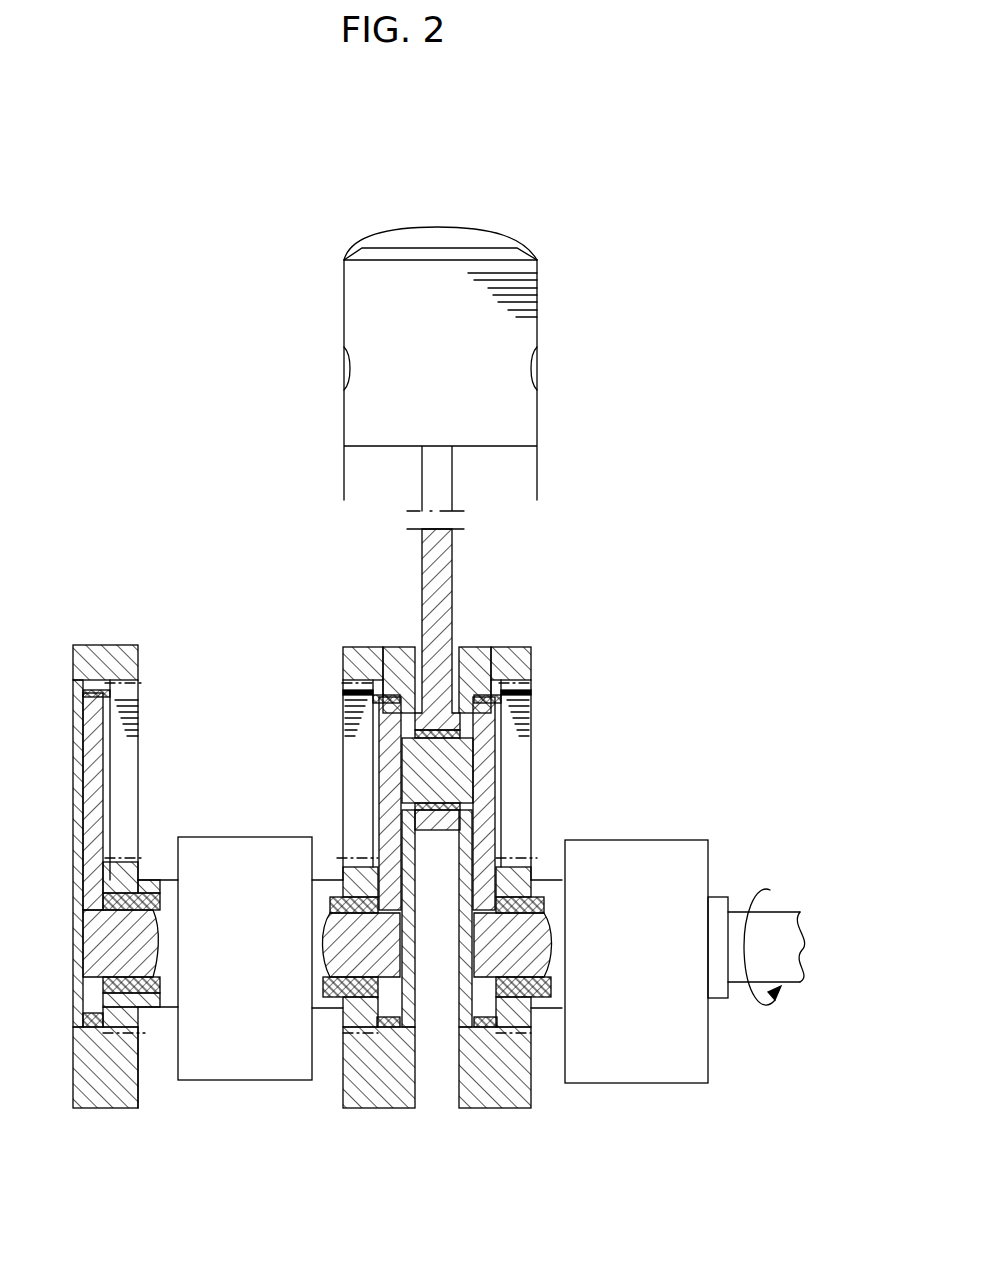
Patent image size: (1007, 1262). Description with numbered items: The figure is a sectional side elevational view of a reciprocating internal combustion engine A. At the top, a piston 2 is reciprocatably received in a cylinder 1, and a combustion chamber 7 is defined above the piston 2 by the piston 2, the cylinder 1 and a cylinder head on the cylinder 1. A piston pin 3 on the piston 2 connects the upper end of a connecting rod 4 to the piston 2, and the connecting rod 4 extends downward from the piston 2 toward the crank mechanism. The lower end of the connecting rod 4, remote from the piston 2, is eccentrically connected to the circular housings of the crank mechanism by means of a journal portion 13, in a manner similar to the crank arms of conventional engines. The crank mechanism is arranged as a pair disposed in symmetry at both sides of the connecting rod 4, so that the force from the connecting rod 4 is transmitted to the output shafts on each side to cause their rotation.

The cylinder 1 is at (470, 394).
The piston 2 is at (527, 266).
The piston pin 3 is at (468, 359).
The connecting rod 4 is at (479, 662).
The combustion chamber 7 is at (440, 211).
The journal portion 13 is at (507, 758).
The reciprocating internal combustion engine A is at (605, 295).